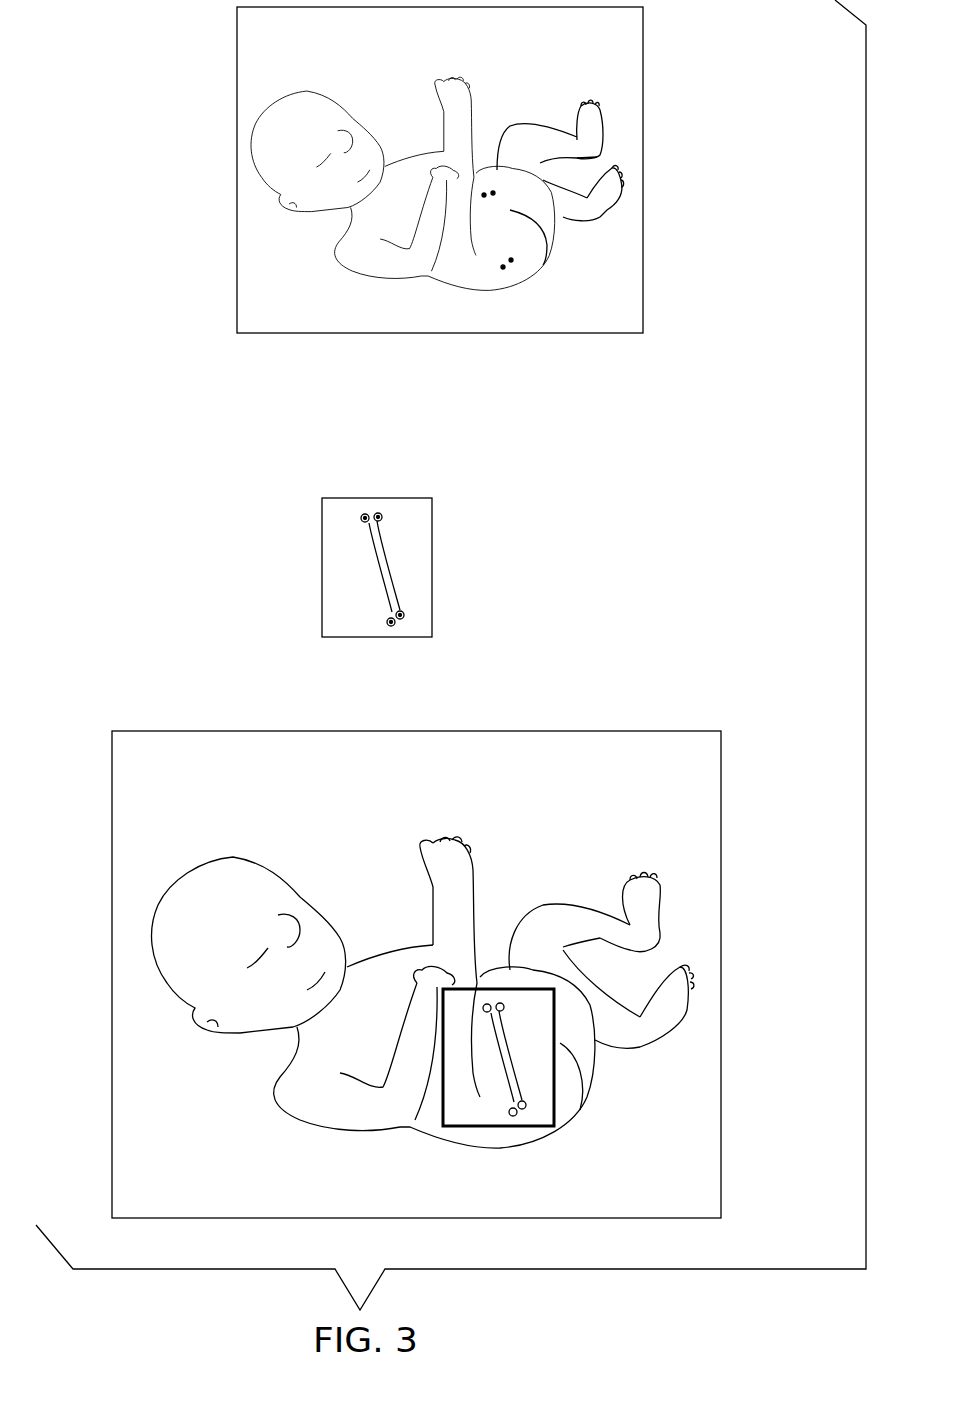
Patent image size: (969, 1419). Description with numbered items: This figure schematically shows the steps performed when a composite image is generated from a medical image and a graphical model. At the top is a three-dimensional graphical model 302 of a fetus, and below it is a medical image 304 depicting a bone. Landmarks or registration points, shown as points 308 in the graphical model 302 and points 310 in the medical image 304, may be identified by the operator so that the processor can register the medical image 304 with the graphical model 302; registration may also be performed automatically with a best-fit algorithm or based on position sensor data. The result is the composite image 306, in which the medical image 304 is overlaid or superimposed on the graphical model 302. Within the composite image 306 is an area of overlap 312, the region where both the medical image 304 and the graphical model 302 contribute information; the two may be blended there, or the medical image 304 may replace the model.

The 3D graphical model 302 is at (587, 52).
The medical image 304 is at (407, 520).
The composite image 306 is at (735, 733).
The points 308 is at (493, 193).
The points 310 is at (365, 517).
The area of overlap 312 is at (525, 1030).